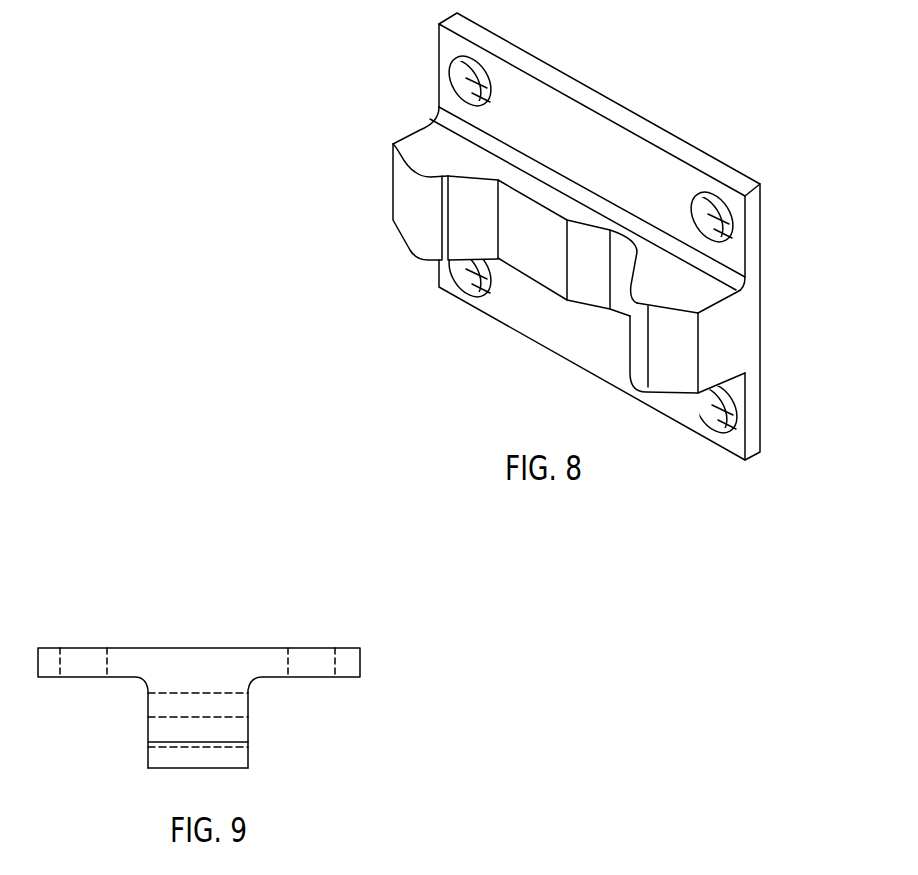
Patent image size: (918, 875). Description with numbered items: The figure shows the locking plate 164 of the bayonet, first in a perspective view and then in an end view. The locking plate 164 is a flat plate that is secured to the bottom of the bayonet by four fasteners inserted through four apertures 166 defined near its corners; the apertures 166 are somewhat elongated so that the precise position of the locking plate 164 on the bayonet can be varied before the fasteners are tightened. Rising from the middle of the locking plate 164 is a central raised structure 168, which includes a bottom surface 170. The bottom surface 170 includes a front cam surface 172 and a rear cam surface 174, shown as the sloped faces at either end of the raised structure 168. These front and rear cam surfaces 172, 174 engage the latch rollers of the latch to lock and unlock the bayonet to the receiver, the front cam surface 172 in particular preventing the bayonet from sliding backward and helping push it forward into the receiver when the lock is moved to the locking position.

In FIG. 8, the locking plate 164 is at (312, 45).
In FIG. 9, the locking plate 164 is at (181, 521).
In FIG. 8, the apertures 166 is at (478, 78).
In FIG. 9, the apertures 166 is at (82, 662).
In FIG. 8, the central raised structure 168 is at (738, 340).
In FIG. 9, the central raised structure 168 is at (250, 727).
In FIG. 8, the bottom surface 170 is at (549, 253).
In FIG. 9, the bottom surface 170 is at (187, 770).
In FIG. 8, the front cam surface 172 is at (470, 217).
In FIG. 8, the rear cam surface 174 is at (635, 273).